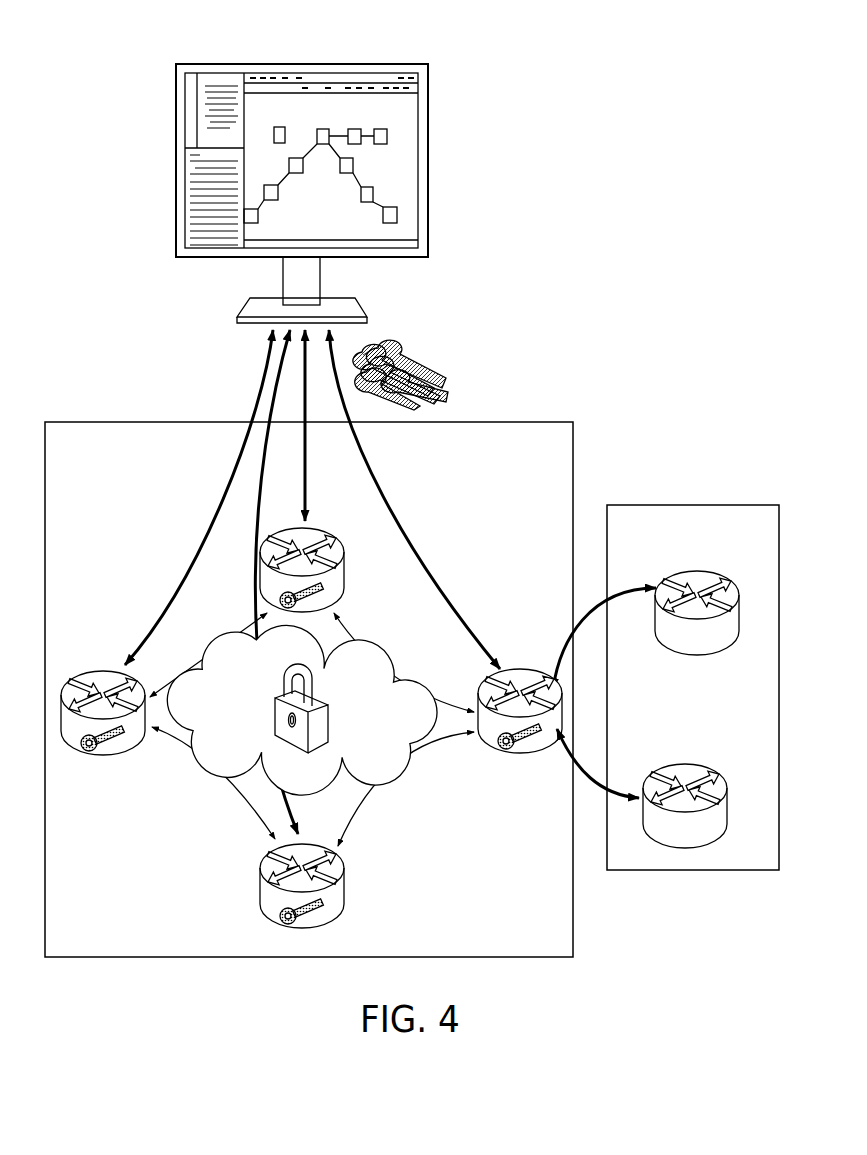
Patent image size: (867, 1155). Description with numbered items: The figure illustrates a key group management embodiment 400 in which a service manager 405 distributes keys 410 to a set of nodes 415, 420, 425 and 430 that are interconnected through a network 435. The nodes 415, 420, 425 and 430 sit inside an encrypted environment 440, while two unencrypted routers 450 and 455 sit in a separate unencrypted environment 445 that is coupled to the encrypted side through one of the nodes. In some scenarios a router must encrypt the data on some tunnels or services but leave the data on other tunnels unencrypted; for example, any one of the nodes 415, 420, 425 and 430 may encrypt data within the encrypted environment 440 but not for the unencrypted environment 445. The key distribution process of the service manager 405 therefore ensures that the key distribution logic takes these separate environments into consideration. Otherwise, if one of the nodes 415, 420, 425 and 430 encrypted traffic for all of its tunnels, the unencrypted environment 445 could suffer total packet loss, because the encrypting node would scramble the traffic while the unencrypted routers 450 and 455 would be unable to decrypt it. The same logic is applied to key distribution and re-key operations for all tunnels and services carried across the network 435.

The key group management embodiment 400 is at (123, 116).
The service manager 405 is at (177, 230).
The keys 410 is at (452, 377).
The node 415 is at (263, 556).
The node 420 is at (101, 670).
The node 425 is at (520, 669).
The node 430 is at (260, 883).
The network 435 is at (203, 655).
The encrypted environment 440 is at (133, 957).
The unencrypted environment 445 is at (692, 871).
The unencrypted router 450 is at (672, 764).
The unencrypted router 455 is at (698, 656).